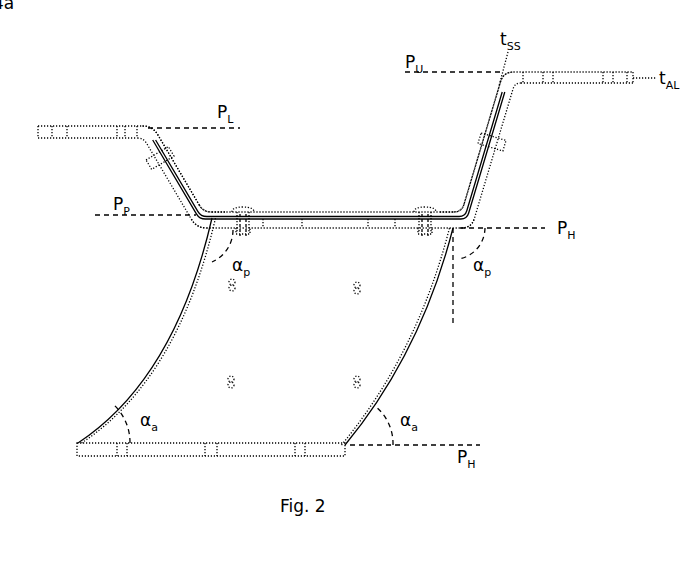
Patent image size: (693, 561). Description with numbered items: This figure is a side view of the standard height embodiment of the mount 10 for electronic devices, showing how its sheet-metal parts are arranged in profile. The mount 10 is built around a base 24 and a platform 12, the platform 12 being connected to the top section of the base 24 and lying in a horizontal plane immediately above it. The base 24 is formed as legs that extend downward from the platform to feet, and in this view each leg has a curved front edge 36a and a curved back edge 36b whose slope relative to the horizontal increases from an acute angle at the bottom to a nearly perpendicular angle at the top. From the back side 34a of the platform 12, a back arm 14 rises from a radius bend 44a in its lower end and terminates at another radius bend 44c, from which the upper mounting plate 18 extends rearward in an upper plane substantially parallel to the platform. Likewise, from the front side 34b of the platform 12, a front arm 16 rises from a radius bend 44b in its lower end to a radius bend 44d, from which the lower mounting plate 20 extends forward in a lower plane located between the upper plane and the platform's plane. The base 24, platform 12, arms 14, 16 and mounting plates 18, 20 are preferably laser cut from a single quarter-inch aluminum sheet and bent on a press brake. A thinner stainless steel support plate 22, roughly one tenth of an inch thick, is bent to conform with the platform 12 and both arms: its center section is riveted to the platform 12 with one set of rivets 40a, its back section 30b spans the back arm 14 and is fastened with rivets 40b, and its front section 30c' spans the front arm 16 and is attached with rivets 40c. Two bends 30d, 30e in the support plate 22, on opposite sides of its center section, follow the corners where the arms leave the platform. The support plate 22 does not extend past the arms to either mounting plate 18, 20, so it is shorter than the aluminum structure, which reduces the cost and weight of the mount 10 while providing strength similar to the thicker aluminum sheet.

The mount 10 is at (77, 57).
The platform 12 is at (262, 225).
The back arm 14 is at (498, 120).
The front arm 16 is at (178, 185).
The upper mounting plate 18 is at (571, 72).
The lower mounting plate 20 is at (95, 127).
The support plate 22 is at (398, 215).
The base 24 is at (450, 346).
The back section of support plate 30b is at (482, 120).
The front section of support plate 30c' is at (197, 129).
The bend in support plate 30d is at (458, 210).
The bend in support plate 30e is at (206, 210).
The back side of platform 34a is at (428, 208).
The front side of platform 34b is at (228, 222).
The curved front edge 36a is at (417, 355).
The curved back edge 36b is at (175, 327).
The rivets 40a is at (420, 224).
The rivets 40b is at (490, 143).
The rivets 40c is at (158, 161).
The radius bend 44a is at (470, 219).
The radius bend 44b is at (200, 220).
The radius bend 44c is at (506, 78).
The radius bend 44d is at (148, 127).